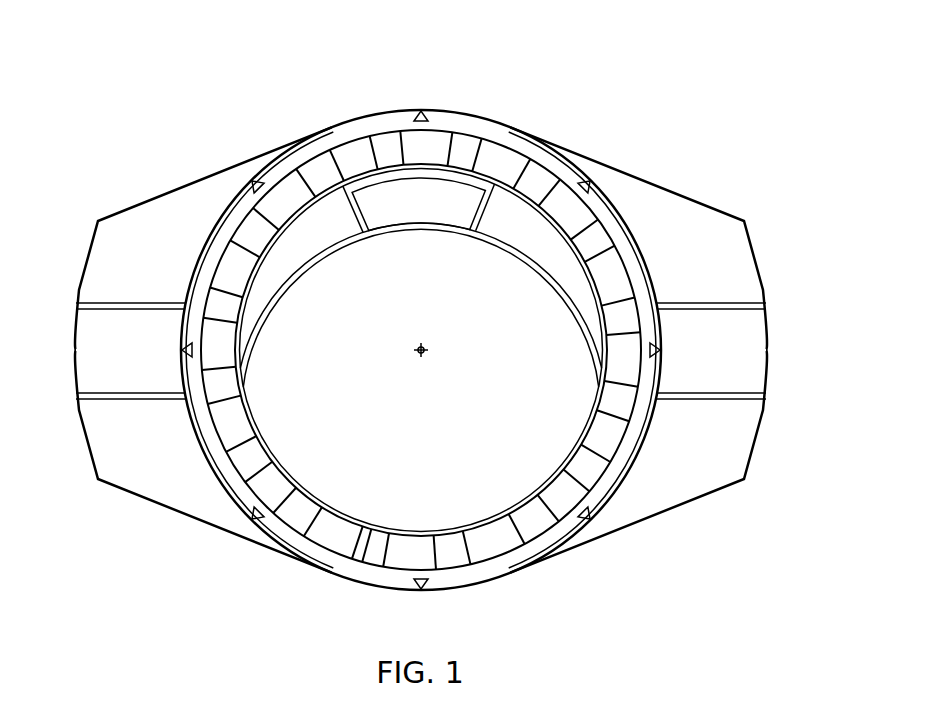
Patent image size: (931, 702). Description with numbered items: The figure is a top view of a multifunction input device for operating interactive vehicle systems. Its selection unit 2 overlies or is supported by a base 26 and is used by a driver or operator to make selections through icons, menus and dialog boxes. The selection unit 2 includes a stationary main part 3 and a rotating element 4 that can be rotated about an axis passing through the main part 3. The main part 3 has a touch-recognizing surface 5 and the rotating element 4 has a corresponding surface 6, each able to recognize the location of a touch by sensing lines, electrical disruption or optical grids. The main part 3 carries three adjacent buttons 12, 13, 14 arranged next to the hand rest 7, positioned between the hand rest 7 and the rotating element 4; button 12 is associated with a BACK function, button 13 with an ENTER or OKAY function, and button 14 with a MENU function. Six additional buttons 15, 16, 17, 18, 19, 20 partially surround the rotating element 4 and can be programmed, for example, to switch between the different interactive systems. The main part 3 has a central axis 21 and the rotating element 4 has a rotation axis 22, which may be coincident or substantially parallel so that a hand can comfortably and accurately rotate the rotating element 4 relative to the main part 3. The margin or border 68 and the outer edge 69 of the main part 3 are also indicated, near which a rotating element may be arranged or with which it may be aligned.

The selection unit 2 is at (557, 40).
The main part 3 is at (473, 303).
The rotating element 4 is at (494, 150).
The surface 5 is at (546, 320).
The surface 6 is at (538, 177).
The hand rest 7 is at (517, 383).
The button 12 is at (310, 198).
The button 13 is at (387, 179).
The button 14 is at (556, 265).
The additional button 15 is at (95, 274).
The additional button 16 is at (95, 385).
The additional button 17 is at (96, 440).
The additional button 18 is at (745, 442).
The additional button 19 is at (752, 385).
The additional button 20 is at (745, 276).
The central axis 21 is at (418, 348).
The rotation axis 22 is at (416, 357).
The base 26 is at (584, 592).
The margin or border 68 is at (377, 537).
The outer edge 69 is at (354, 532).